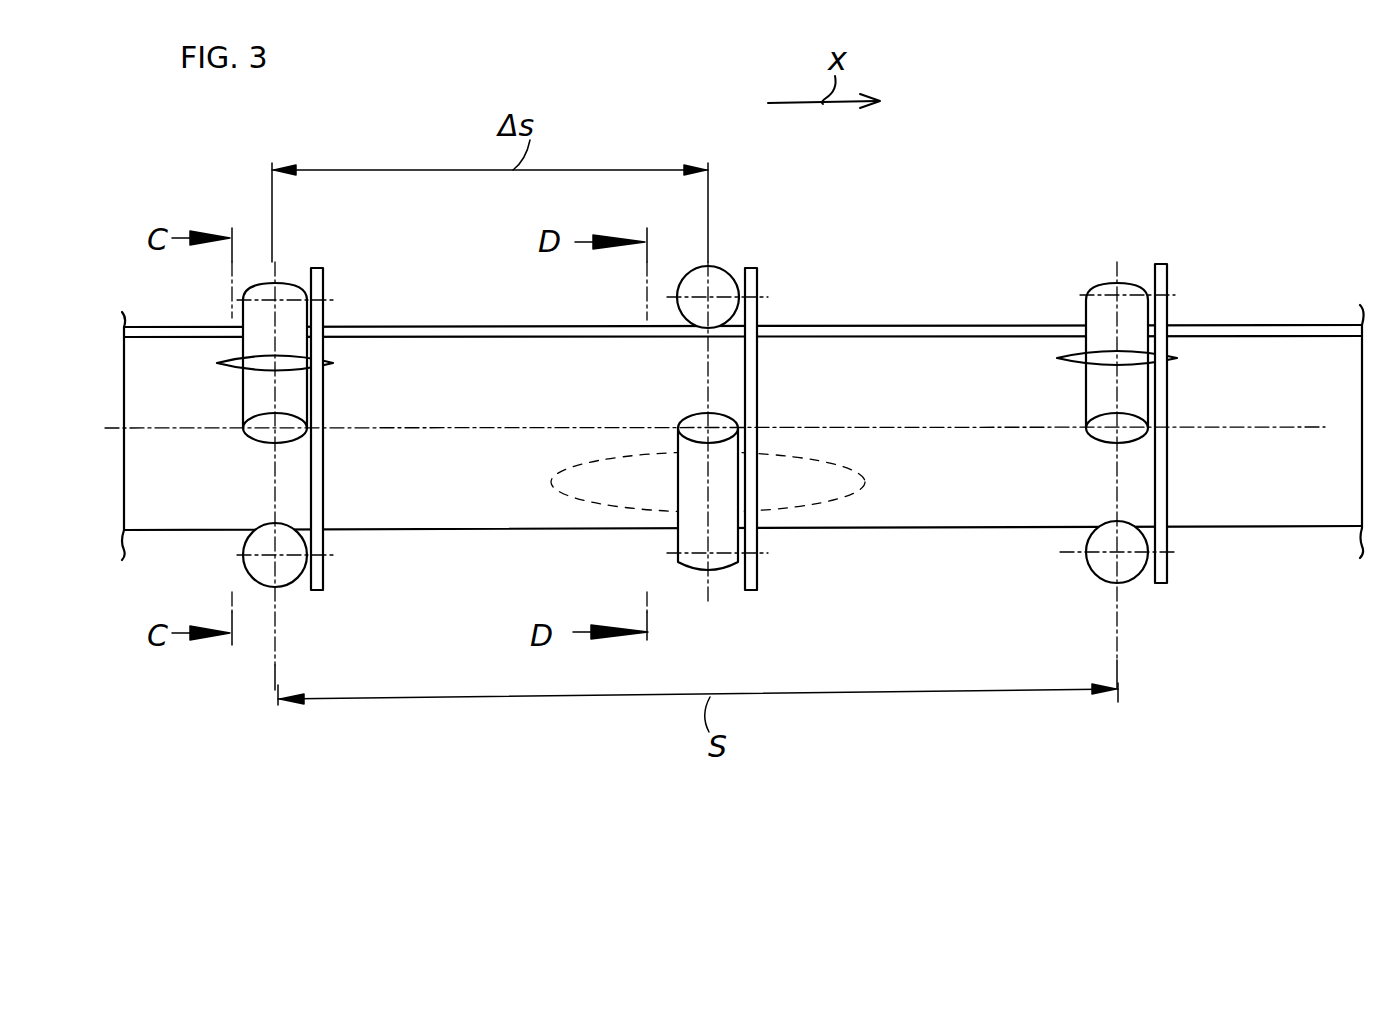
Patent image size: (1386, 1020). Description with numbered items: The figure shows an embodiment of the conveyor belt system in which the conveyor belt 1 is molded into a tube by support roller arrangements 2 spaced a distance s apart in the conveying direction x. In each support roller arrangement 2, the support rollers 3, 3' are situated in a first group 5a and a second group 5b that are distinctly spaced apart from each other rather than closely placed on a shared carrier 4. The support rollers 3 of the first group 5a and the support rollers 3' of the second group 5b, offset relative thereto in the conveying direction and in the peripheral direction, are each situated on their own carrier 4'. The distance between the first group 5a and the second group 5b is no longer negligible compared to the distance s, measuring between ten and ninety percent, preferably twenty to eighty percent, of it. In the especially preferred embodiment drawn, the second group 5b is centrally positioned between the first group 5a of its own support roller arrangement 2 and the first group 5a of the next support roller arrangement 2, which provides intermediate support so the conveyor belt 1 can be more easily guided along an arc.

The conveyor belt 1 is at (903, 342).
The support roller arrangement 2 is at (678, 233).
The support roller 3 is at (673, 371).
The support roller 3' is at (712, 363).
The carrier 4 is at (768, 445).
The carrier 4' is at (784, 449).
The first group 5a is at (252, 252).
The second group 5b is at (735, 236).